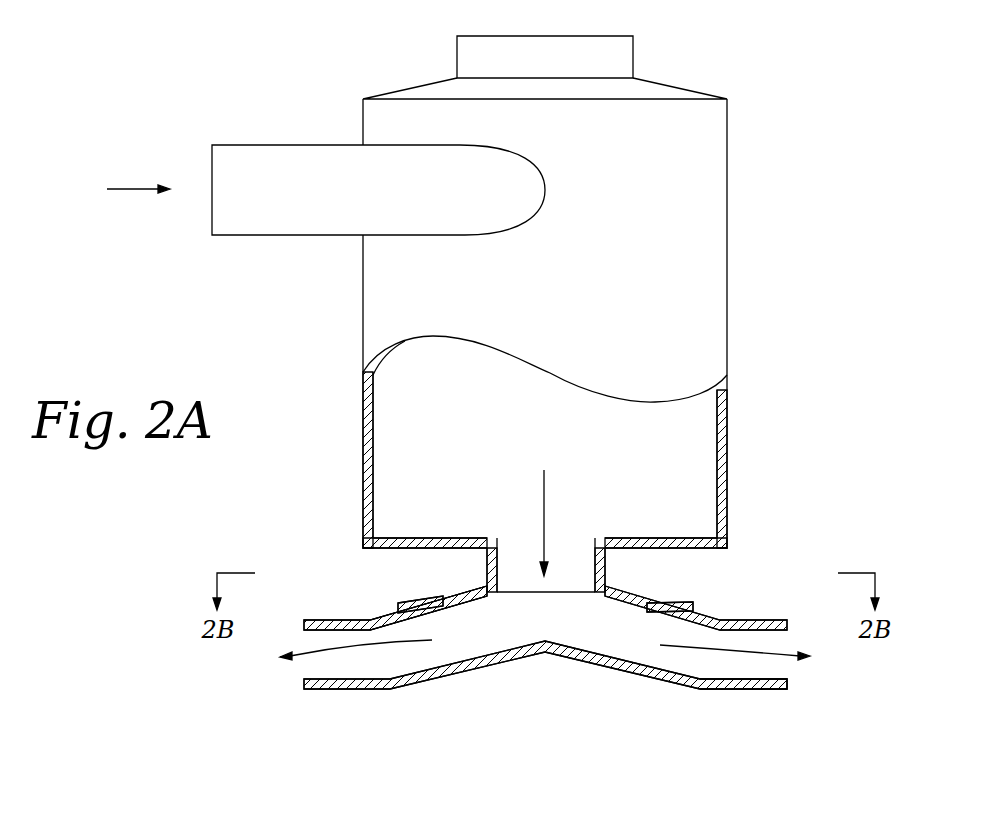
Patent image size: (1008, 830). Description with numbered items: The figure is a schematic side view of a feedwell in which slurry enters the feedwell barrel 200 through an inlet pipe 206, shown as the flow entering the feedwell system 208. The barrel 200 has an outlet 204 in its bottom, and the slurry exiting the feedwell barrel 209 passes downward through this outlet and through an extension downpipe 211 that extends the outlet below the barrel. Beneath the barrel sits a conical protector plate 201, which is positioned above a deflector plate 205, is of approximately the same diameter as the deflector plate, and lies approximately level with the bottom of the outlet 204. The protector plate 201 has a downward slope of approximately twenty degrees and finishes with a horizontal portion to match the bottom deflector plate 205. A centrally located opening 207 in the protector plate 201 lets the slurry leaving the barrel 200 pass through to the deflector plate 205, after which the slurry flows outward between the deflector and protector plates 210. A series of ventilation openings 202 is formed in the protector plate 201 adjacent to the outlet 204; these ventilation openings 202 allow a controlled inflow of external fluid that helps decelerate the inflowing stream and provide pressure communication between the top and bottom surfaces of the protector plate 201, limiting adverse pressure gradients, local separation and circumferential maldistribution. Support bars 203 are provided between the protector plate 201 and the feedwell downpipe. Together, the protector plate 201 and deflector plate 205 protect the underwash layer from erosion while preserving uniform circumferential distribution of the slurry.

The feedwell barrel 200 is at (727, 260).
The protector plate 201 is at (329, 620).
The ventilation openings 202 is at (466, 602).
The support bars 203 is at (640, 591).
The outlet 204 is at (513, 547).
The deflector plate 205 is at (333, 690).
The inlet pipe 206 is at (262, 144).
The opening 207 is at (562, 598).
The slurry flow entering the feedwell system 208 is at (122, 188).
The slurry flow exiting the feedwell barrel 209 is at (547, 499).
The slurry flow passing between the deflector and protector plates 210 is at (752, 657).
The extension downpipe 211 is at (487, 575).